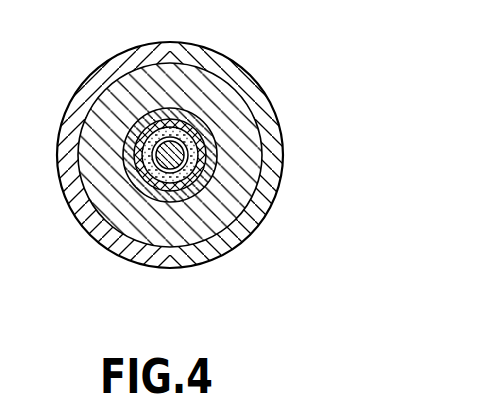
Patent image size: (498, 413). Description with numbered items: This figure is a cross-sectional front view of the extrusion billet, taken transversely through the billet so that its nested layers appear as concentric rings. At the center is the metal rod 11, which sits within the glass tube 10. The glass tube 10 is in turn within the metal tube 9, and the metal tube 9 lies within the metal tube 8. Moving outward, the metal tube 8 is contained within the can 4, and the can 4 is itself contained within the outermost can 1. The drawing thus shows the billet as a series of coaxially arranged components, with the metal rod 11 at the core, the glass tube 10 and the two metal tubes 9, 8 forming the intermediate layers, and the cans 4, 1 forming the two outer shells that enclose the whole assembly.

The can 1 is at (268, 115).
The can 4 is at (254, 153).
The metal tube 8 is at (214, 161).
The metal tube 9 is at (185, 175).
The glass tube 10 is at (178, 182).
The metal rod 11 is at (160, 175).